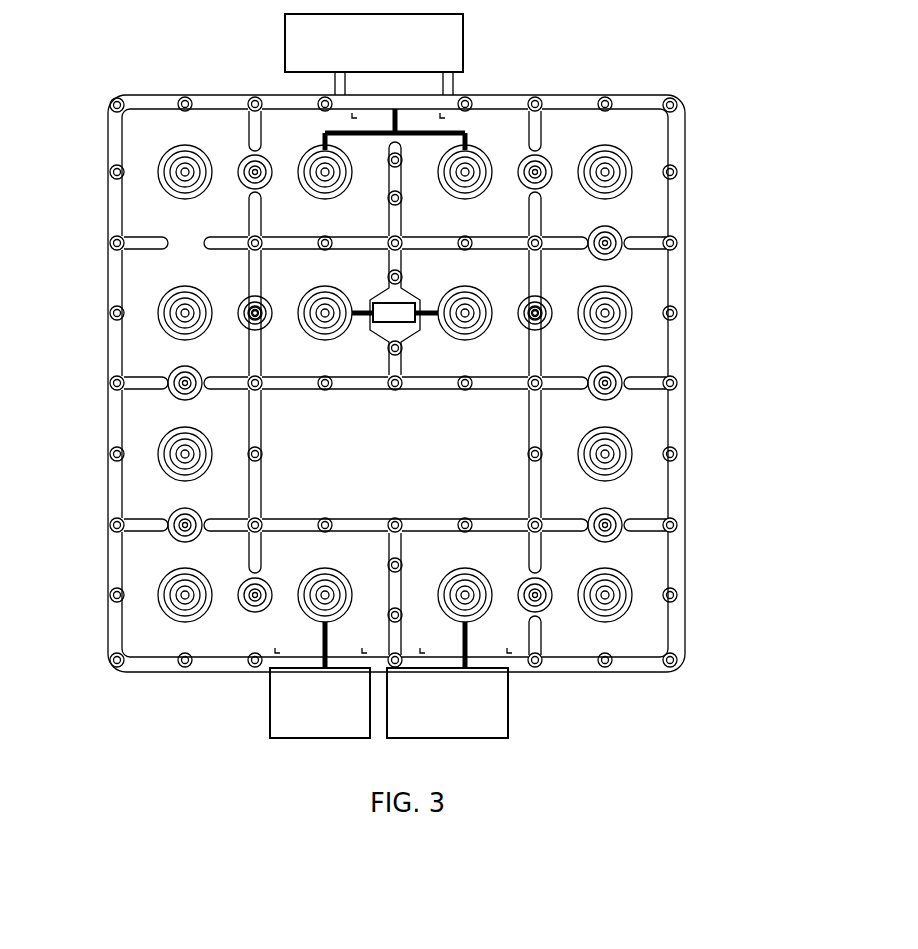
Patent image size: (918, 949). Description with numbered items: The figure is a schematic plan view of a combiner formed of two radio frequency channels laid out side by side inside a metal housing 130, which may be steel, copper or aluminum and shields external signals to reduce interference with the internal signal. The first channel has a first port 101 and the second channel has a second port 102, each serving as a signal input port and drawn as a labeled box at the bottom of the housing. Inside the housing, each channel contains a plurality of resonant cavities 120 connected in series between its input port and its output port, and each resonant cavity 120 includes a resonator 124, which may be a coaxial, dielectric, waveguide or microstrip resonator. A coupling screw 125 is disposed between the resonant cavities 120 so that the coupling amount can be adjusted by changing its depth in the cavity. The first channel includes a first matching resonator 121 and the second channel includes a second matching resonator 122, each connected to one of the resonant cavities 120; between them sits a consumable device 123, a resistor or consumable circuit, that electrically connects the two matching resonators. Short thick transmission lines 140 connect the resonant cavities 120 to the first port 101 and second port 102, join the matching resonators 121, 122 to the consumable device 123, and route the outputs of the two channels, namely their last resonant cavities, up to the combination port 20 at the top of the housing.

The combination port 20 is at (374, 54).
The first port 101 is at (320, 703).
The second port 102 is at (447, 703).
The resonant cavity 120 is at (138, 312).
The first matching resonator 121 is at (337, 337).
The second matching resonator 122 is at (450, 327).
The consumable device 123 is at (392, 322).
The resonator 124 is at (615, 432).
The coupling screw 125 is at (613, 515).
The housing 130 is at (642, 95).
The transmission line 140 is at (418, 123).